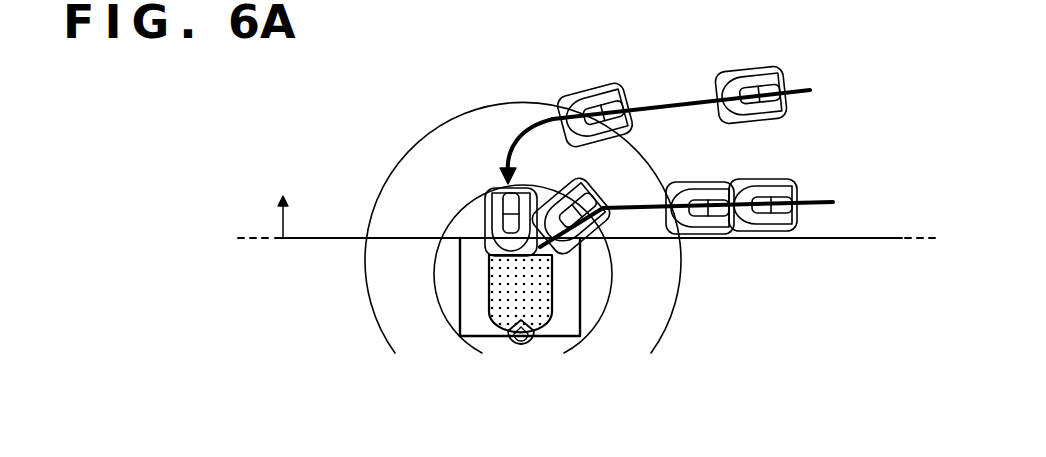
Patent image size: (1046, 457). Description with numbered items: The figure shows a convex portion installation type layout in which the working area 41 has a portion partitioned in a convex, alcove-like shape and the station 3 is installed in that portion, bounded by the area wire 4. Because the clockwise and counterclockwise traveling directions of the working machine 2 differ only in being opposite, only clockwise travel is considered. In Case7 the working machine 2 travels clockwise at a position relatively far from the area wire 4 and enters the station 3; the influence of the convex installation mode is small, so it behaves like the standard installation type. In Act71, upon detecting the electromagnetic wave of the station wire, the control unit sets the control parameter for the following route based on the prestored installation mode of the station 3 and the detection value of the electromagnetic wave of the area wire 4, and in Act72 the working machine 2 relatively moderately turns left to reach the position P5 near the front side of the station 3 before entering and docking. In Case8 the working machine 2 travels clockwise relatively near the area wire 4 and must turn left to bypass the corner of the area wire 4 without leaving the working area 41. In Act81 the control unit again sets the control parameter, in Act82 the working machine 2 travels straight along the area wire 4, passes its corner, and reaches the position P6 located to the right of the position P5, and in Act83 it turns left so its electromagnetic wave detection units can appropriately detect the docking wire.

The working machine 2 is at (643, 172).
The station 3 is at (516, 350).
The area wire 4 is at (845, 238).
The working area 41 is at (332, 214).
The action of setting control parameter in Case7 Act71 is at (586, 95).
The action of moderately turning left in Case7 Act72 is at (521, 134).
The action of setting control parameter in Case8 Act81 is at (680, 182).
The action of traveling straight along area wire in Case8 Act82 is at (622, 228).
The action of turning left in Case8 Act83 is at (550, 240).
The position near front side of station P5 is at (490, 182).
The position on right side of P5 P6 is at (590, 187).
The case of traveling relatively apart from area wire Case7 is at (802, 95).
The case of traveling relatively near area wire Case8 is at (819, 205).